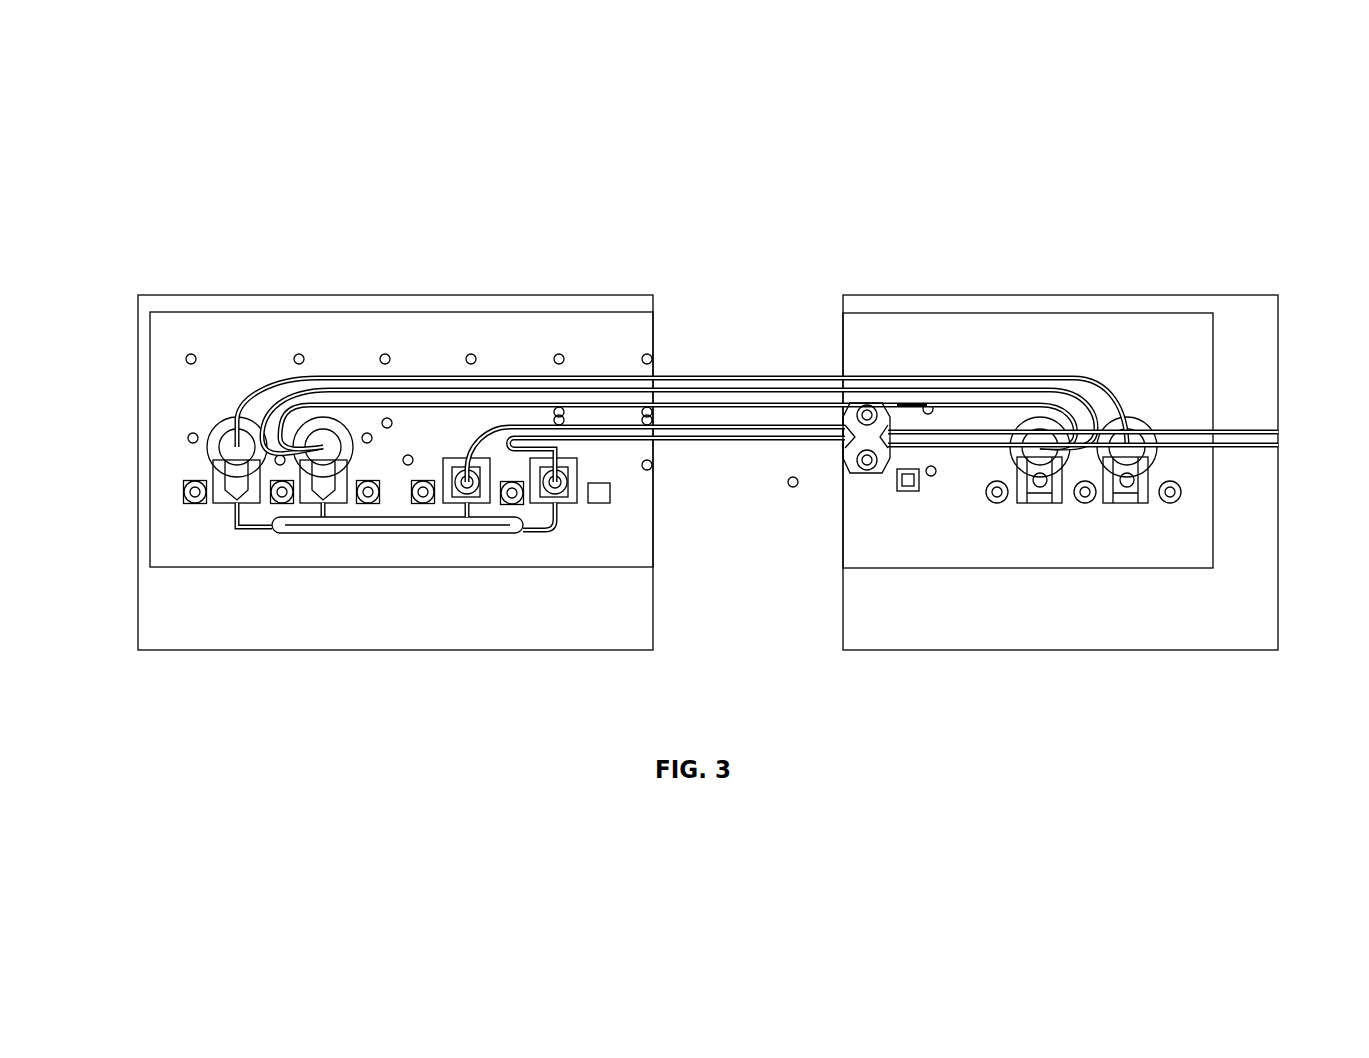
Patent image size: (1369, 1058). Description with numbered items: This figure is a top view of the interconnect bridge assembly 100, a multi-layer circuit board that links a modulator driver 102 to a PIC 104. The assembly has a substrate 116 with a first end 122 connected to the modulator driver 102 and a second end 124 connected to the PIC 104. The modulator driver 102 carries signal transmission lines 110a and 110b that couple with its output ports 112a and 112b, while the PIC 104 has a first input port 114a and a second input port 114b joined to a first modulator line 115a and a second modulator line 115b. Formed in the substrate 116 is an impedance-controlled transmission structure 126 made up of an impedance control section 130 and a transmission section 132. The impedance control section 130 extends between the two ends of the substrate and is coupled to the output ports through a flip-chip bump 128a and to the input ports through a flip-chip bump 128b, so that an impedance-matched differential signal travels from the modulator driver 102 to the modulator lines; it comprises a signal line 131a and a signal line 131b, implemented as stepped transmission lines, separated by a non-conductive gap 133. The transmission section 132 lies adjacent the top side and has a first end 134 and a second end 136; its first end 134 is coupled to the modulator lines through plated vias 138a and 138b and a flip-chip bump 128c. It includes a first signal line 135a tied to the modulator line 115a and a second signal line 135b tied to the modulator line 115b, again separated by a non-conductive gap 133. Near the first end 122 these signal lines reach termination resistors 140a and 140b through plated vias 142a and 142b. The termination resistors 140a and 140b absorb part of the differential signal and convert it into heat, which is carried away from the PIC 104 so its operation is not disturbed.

The interconnect bridge assembly 100 is at (460, 295).
The modulator driver 102 is at (880, 652).
The PIC 104 is at (415, 652).
The signal transmission line 110a is at (1278, 455).
The signal transmission line 110b is at (1217, 353).
The output port 112a is at (852, 475).
The output port 112b is at (845, 432).
The first input port 114a is at (560, 503).
The second input port 114b is at (472, 503).
The first modulator line 115a is at (305, 533).
The second modulator line 115b is at (385, 533).
The substrate 116 is at (758, 312).
The first end 122 is at (1280, 315).
The second end 124 is at (222, 313).
The impedance-controlled transmission structure 126 is at (662, 428).
The flip-chip bump 128a is at (870, 408).
The flip-chip bump 128b is at (463, 503).
The flip-chip bump 128c is at (236, 500).
The impedance control section 130 is at (748, 427).
The signal line 131a is at (668, 437).
The signal line 131b is at (705, 447).
The transmission section 132 is at (618, 380).
The non-conductive gap 133 is at (437, 405).
The first end 134 is at (263, 375).
The first signal line 135a is at (322, 378).
The second signal line 135b is at (385, 392).
The second end 136 is at (1112, 390).
The plated via 138a is at (230, 482).
The plated via 138b is at (320, 452).
The termination resistor 140a is at (1048, 500).
The termination resistor 140b is at (1040, 510).
The plated via 142a is at (1140, 500).
The plated via 142b is at (1127, 510).